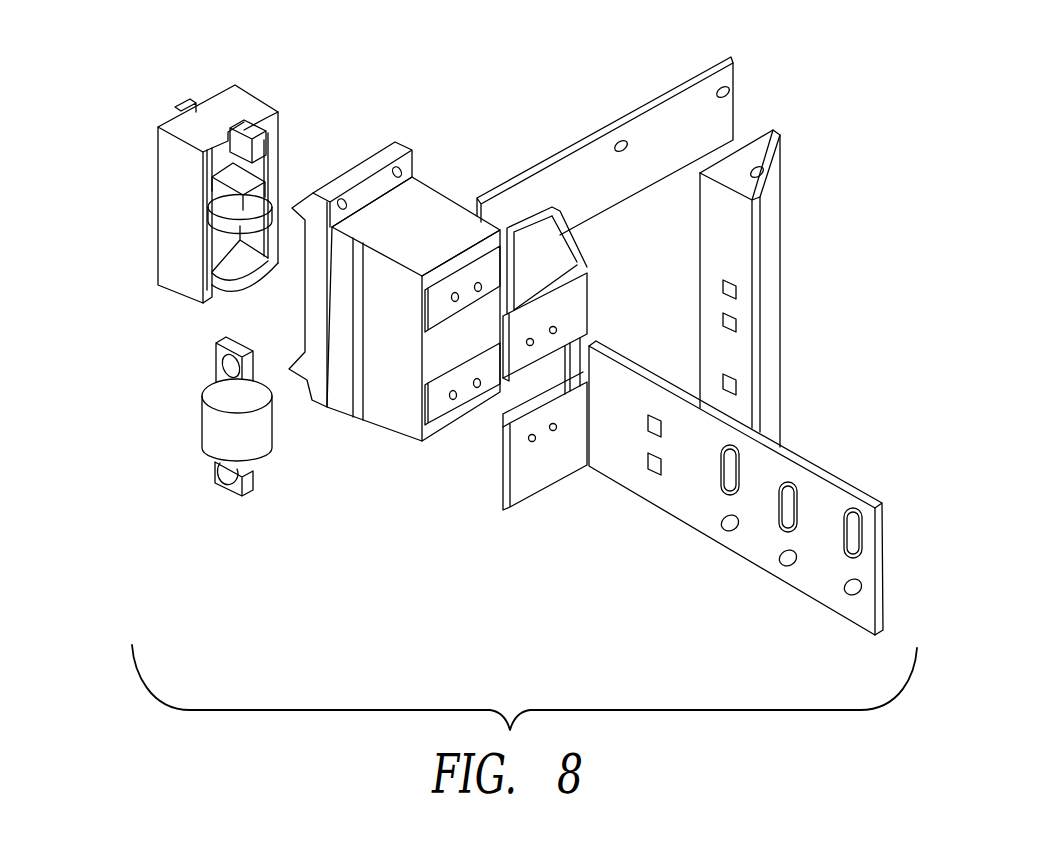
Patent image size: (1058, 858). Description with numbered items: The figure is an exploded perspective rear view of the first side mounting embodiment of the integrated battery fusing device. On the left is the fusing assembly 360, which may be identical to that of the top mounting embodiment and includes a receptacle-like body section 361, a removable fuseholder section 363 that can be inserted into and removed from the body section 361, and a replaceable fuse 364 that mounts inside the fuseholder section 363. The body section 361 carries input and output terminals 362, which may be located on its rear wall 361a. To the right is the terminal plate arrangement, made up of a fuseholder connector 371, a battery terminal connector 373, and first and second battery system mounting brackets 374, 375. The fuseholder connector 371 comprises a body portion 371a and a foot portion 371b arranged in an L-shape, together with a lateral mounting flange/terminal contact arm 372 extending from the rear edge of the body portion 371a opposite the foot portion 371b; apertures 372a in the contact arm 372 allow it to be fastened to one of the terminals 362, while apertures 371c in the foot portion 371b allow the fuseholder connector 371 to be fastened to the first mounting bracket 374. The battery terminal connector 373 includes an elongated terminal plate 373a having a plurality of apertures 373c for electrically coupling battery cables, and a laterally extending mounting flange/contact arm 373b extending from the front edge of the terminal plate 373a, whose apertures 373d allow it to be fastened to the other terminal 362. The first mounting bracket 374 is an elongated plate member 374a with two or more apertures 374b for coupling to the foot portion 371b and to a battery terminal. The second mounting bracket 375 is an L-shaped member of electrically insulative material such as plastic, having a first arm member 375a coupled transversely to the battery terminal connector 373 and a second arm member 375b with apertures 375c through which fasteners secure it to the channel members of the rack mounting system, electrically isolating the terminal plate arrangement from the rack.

The fusing assembly 360 is at (140, 362).
The receptacle-like body section 361 is at (390, 230).
The rear wall 361a is at (467, 337).
The input and output terminals 362 is at (433, 407).
The removable fuseholder section 363 is at (224, 88).
The replaceable fuse 364 is at (225, 432).
The fuseholder connector 371 is at (531, 216).
The body portion 371a is at (567, 253).
The foot portion 371b is at (558, 232).
The apertures 371c is at (563, 240).
The mounting flange/terminal contact arm 372 is at (570, 297).
The apertures 372a is at (507, 407).
The battery terminal connector 373 is at (807, 460).
The elongated terminal plate 373a is at (767, 540).
The mounting flange/contact arm 373b is at (563, 463).
The apertures 373c is at (850, 598).
The apertures 373d is at (533, 443).
The first battery system mounting bracket 374 is at (738, 82).
The elongated plate member 374a is at (703, 125).
The apertures 374b is at (625, 145).
The second mounting bracket 375 is at (783, 293).
The first arm member 375a is at (733, 353).
The second arm member 375b is at (773, 237).
The apertures 375c is at (767, 173).